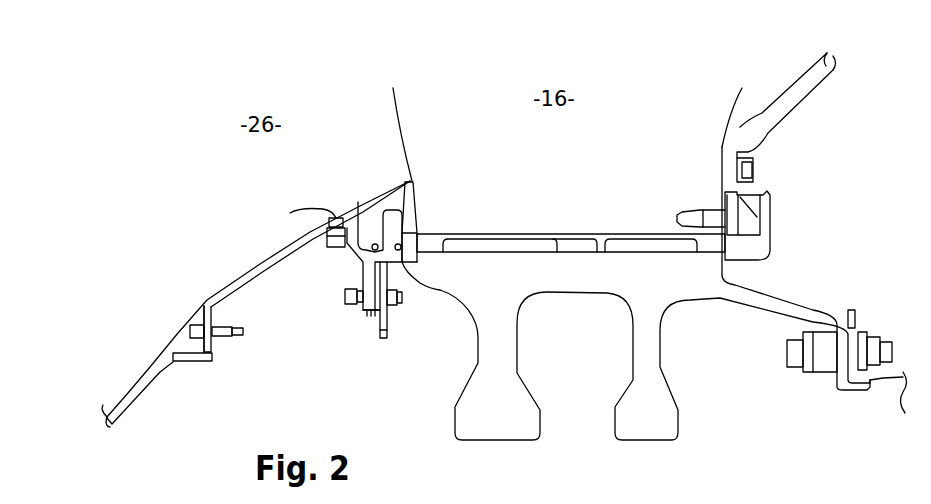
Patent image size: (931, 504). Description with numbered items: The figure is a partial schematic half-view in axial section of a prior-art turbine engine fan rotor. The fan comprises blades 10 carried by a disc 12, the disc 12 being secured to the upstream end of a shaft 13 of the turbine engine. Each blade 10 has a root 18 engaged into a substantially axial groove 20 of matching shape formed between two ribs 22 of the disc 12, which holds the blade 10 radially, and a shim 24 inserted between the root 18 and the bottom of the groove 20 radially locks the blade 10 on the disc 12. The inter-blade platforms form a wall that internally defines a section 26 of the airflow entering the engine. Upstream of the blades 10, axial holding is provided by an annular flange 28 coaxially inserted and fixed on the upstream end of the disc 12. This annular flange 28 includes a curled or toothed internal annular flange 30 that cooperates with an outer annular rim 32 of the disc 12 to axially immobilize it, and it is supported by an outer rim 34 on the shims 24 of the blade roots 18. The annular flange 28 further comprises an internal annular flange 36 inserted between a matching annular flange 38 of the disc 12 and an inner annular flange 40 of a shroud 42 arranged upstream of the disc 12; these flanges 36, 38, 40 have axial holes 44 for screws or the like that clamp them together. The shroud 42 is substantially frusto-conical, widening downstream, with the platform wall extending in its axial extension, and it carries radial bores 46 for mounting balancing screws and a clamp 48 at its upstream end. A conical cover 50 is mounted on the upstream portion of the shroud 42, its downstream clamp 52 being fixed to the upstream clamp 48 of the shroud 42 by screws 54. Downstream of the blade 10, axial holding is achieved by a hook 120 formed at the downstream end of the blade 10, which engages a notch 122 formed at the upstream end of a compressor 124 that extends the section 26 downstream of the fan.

The blade 10 is at (696, 68).
The disc 12 is at (424, 424).
The shaft 13 is at (890, 400).
The root 18 is at (518, 232).
The groove 20 is at (598, 245).
The ribs 22 is at (565, 245).
The shim 24 is at (500, 238).
The section 26 is at (256, 304).
The annular flange 28 is at (364, 195).
The internal annular flange 30 is at (420, 268).
The outer annular rim 32 is at (398, 278).
The outer rim 34 is at (371, 216).
The internal annular flange 36 is at (374, 315).
The annular flange 38 is at (386, 338).
The inner annular flange 40 is at (364, 312).
The shroud 42 is at (272, 282).
The axial holes 44 is at (344, 295).
The bolt 46 is at (342, 218).
The clamp 48 is at (212, 318).
The conical cover 50 is at (125, 362).
The clamp 52 is at (206, 308).
The screws 54 is at (236, 338).
The hook 120 is at (762, 212).
The notch 122 is at (722, 215).
The compressor 124 is at (830, 100).